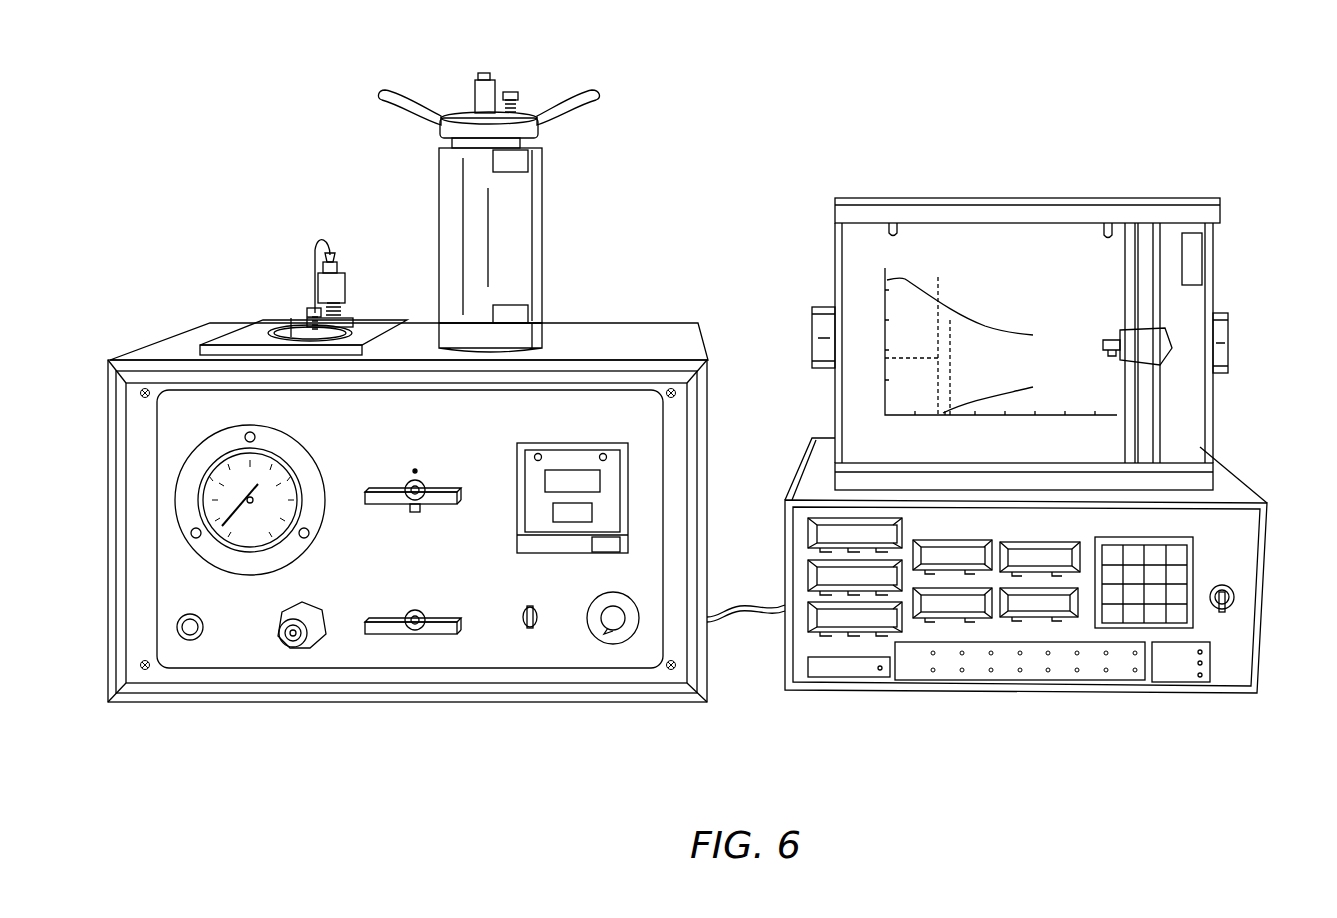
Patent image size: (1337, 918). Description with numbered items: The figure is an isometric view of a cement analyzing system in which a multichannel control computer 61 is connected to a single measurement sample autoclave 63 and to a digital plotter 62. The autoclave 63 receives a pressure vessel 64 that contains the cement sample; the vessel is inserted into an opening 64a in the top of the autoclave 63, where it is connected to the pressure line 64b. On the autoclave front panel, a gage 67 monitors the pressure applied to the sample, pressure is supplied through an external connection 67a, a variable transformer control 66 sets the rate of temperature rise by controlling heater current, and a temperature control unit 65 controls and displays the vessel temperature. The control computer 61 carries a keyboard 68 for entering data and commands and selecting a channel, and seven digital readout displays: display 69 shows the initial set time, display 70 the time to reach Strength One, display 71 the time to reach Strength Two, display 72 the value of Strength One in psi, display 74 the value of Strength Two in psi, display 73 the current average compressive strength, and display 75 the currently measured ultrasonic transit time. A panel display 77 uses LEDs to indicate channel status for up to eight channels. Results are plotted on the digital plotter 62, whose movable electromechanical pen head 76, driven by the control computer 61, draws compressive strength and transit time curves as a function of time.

The control computer 61 is at (870, 690).
The digital plotter 62 is at (853, 250).
The autoclave 63 is at (542, 405).
The pressure vessel 64 is at (536, 202).
The opening 64a is at (291, 337).
The pressure line 64b is at (347, 290).
The temperature control unit 65 is at (618, 475).
The variable transformer control 66 is at (620, 640).
The gage 67 is at (200, 503).
The external connection 67a is at (305, 645).
The keyboard 68 is at (1207, 557).
The digital readout display 69 is at (810, 527).
The digital readout display 70 is at (810, 577).
The digital display 71 is at (810, 617).
The digital display 72 is at (947, 542).
The digital display 73 is at (1070, 548).
The digital display 74 is at (952, 617).
The digital display 75 is at (1040, 617).
The electromechanical pen head 76 is at (1157, 340).
The panel display 77 is at (1117, 677).